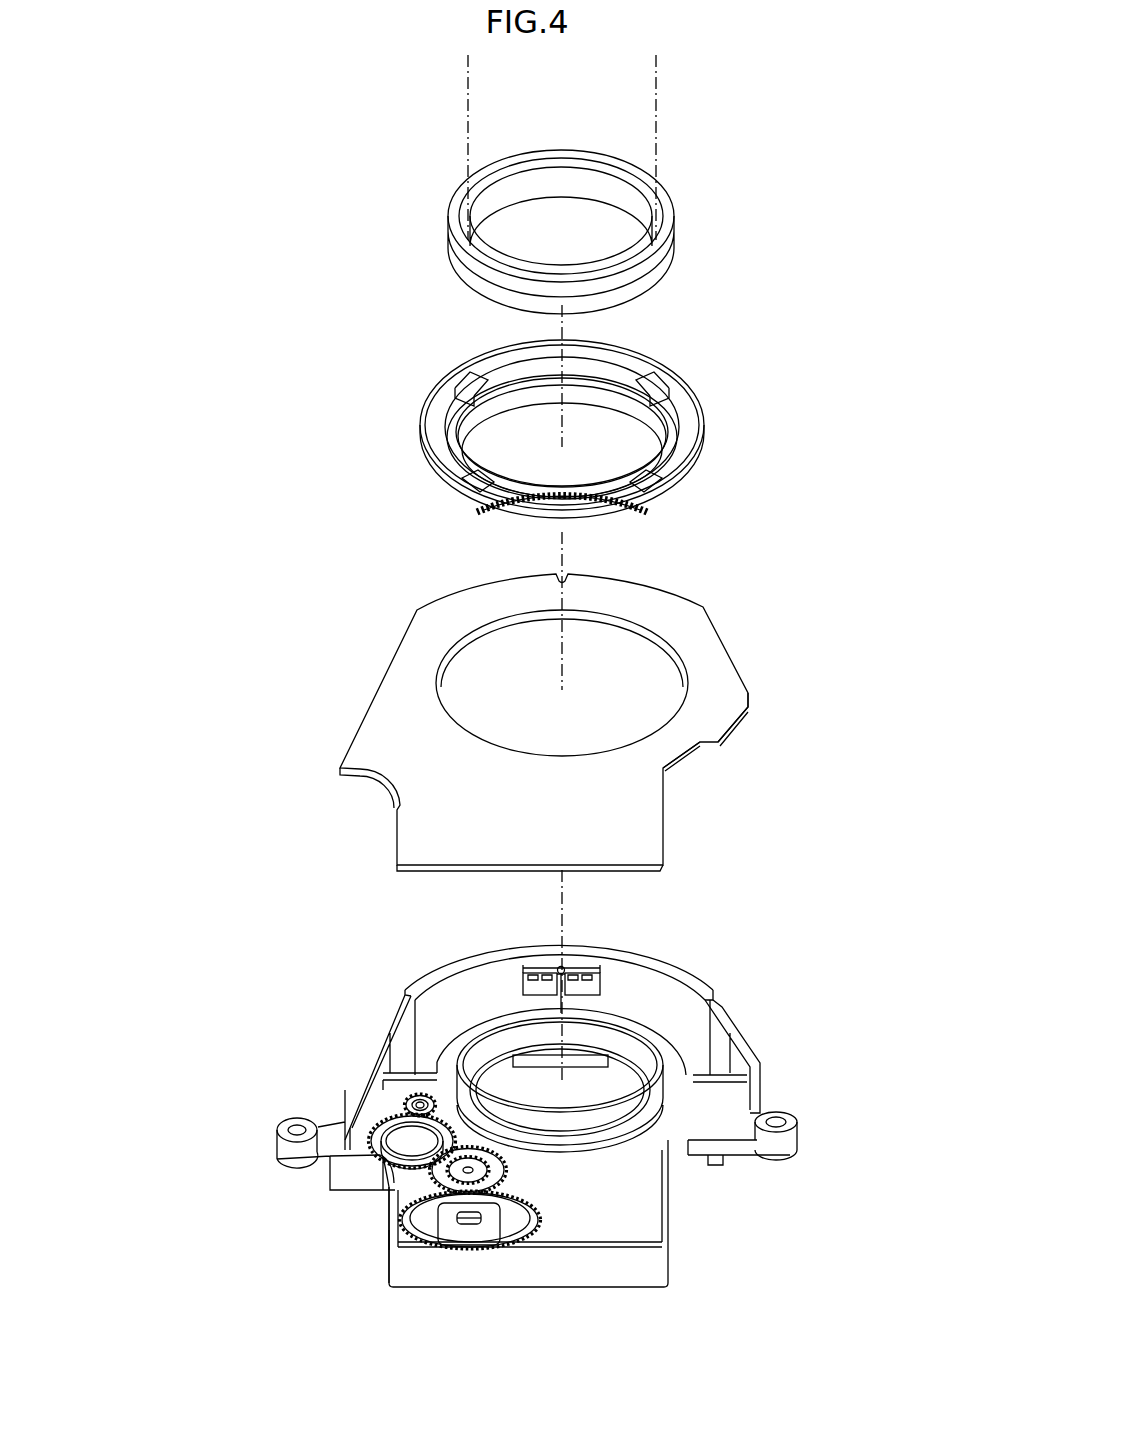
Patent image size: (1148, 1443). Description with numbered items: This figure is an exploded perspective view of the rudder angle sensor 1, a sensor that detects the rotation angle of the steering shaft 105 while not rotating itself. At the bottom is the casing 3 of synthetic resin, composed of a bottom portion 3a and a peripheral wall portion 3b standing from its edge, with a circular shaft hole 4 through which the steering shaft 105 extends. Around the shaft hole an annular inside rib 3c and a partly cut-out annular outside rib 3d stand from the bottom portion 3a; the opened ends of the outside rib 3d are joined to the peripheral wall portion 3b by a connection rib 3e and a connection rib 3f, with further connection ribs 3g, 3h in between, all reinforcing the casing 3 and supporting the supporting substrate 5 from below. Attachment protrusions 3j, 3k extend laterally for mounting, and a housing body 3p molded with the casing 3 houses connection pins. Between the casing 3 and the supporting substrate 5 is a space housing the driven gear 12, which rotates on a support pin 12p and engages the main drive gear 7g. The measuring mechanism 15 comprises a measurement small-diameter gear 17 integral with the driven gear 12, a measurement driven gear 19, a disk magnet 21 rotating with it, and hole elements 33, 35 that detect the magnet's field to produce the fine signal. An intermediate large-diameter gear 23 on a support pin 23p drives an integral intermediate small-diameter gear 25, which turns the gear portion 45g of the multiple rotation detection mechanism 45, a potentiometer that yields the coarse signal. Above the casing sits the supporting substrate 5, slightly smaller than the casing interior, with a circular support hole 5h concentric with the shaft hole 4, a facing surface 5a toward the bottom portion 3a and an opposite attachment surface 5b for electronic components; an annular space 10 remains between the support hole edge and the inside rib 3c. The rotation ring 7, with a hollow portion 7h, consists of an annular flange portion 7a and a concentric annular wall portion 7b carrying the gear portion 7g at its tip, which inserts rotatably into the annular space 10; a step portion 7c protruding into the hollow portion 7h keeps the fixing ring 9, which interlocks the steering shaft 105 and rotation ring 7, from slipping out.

The steering shaft 105 is at (657, 77).
The rudder angle sensor 1 is at (789, 251).
The fixing ring 9 is at (688, 189).
The rotation ring 7 is at (548, 418).
The annular flange portion 7a is at (425, 408).
The annular wall portion 7b is at (493, 510).
The gear portion (main drive gear) 7g is at (488, 520).
The step portion 7c is at (620, 388).
The hollow portion 7h is at (612, 448).
The supporting substrate 5 is at (578, 722).
The support hole 5h is at (625, 686).
The attachment surface 5b is at (725, 714).
The facing surface 5a is at (672, 767).
The casing 3 is at (484, 1123).
The bottom portion 3a is at (497, 1007).
The peripheral wall portion 3b is at (425, 982).
The inside rib 3c is at (667, 1160).
The outside rib 3d is at (660, 1028).
The connection rib 3e is at (418, 1103).
The connection rib 3f is at (570, 1258).
The connection rib 3g is at (558, 985).
The connection rib 3h is at (673, 1092).
The attachment protrusion 3j is at (330, 1140).
The attachment protrusion 3k is at (742, 1132).
The housing body 3p is at (590, 975).
The shaft hole 4 is at (620, 1087).
The annular space 10 is at (707, 1100).
The driven gear 12 is at (358, 1076).
The support pin 12p is at (410, 1098).
The measuring mechanism 15 is at (382, 1169).
The measurement small-diameter gear 17 is at (355, 1120).
The measurement driven gear 19 is at (297, 1238).
The disk magnet 21 is at (332, 1215).
The intermediate large-diameter gear 23 is at (467, 1225).
The support pin 23p is at (440, 1195).
The intermediate small-diameter gear 25 is at (400, 1240).
The hole element 33 is at (290, 1162).
The hole element 35 is at (277, 1138).
The multiple rotation detection mechanism 45 is at (474, 1268).
The gear portion 45g is at (548, 1250).